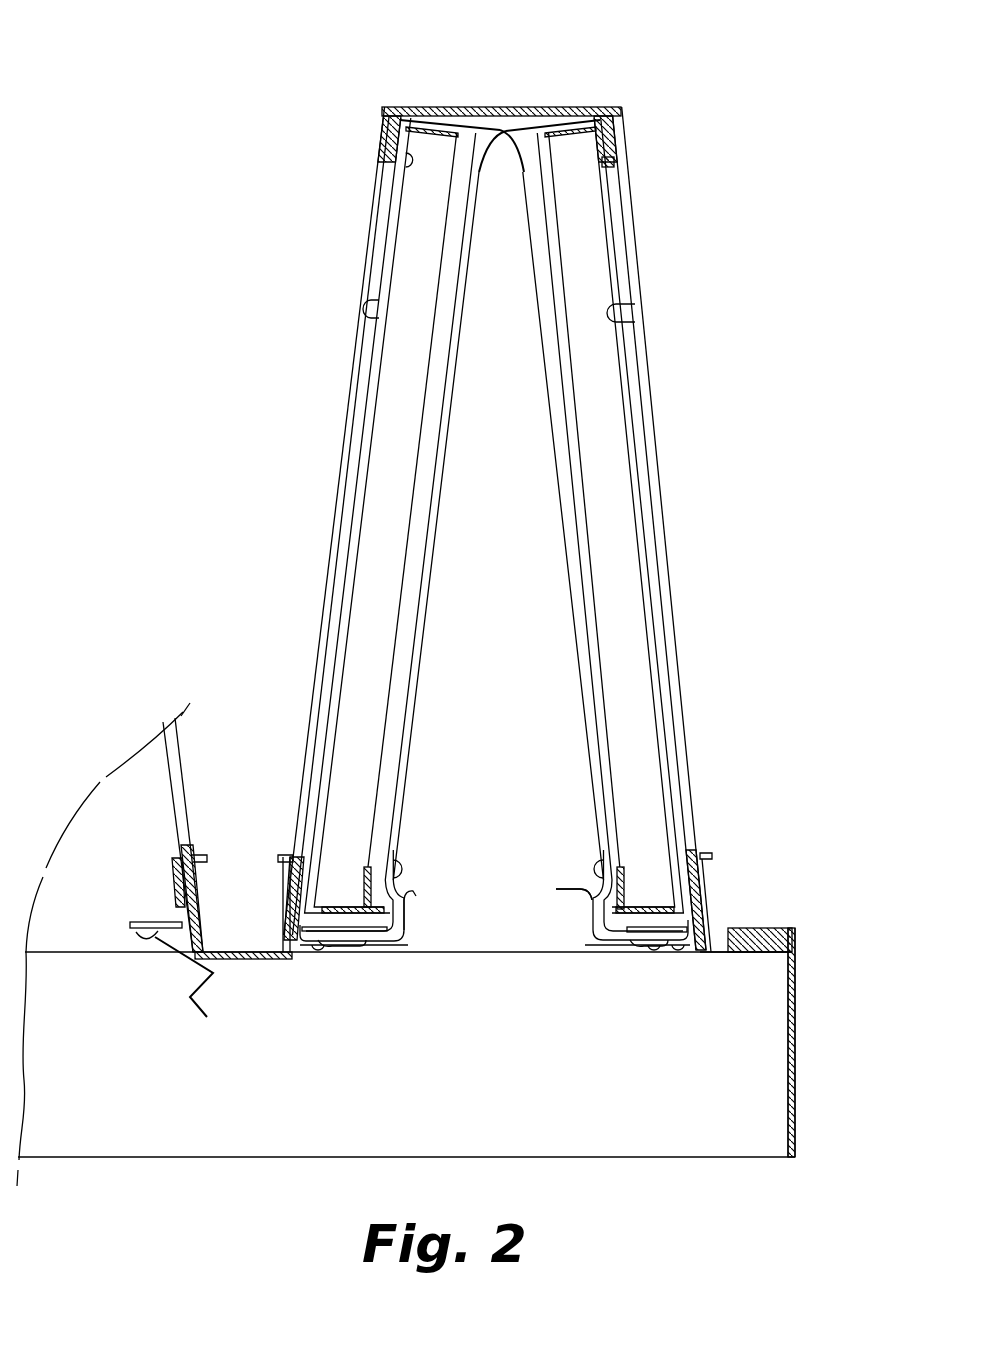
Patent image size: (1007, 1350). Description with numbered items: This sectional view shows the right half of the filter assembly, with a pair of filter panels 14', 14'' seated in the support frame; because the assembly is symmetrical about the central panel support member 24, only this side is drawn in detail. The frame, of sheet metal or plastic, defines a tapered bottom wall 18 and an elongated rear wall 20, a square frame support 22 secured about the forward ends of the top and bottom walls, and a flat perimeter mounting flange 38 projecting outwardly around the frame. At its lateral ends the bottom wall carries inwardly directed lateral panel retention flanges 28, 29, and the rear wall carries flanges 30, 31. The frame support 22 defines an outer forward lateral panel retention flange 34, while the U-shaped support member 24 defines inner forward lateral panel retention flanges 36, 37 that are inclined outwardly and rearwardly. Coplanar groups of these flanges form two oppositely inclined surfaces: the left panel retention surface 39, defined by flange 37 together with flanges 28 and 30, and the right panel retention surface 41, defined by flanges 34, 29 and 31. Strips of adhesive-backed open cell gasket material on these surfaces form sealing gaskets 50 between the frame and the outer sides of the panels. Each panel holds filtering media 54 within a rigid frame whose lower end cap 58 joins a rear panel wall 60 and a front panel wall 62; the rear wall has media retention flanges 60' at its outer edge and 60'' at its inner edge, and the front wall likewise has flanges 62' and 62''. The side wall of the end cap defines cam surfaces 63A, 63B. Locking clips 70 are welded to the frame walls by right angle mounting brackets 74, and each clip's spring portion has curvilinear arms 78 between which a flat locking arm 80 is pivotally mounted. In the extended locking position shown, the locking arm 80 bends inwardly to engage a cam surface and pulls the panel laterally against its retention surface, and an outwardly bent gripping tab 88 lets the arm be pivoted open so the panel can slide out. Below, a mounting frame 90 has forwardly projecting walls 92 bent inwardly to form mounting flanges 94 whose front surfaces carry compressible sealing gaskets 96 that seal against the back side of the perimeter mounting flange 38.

The filter panel 14' is at (391, 537).
The filter panel 14'' is at (605, 536).
The tapered bottom wall 18 is at (502, 585).
The elongated rear wall 20 is at (498, 110).
The frame support 22 is at (749, 955).
The panel support member 24 is at (250, 960).
The lateral panel retention flange 28 is at (349, 384).
The lateral panel retention flange 29 is at (660, 427).
The lateral panel retention flange 30 is at (380, 143).
The lateral panel retention flange 31 is at (628, 148).
The outer forward lateral panel retention flange 34 is at (703, 860).
The inner forward lateral panel retention flange 36 is at (200, 885).
The inner forward lateral panel retention flange 37 is at (292, 882).
The perimeter mounting flange 38 is at (718, 957).
The left panel retention surface 39 is at (372, 318).
The right panel retention surface 41 is at (636, 315).
The sealing gasket 50 is at (392, 122).
The filtering media 54 is at (366, 755).
The lower end cap 58 is at (396, 857).
The rear panel wall 60 is at (517, 90).
The media retention flange 60' is at (508, 179).
The media retention flange 60'' is at (497, 178).
The front panel wall 62 is at (493, 969).
The media retention flange 62' is at (498, 808).
The media retention flange 62'' is at (494, 879).
The cam surface 63A is at (533, 116).
The cam surface 63B is at (530, 115).
The locking clip 70 is at (312, 948).
The mounting bracket 74 is at (172, 924).
The curvilinear arms 78 is at (654, 946).
The locking arm 80 is at (398, 946).
The gripping tab 88 is at (556, 889).
The mounting frame 90 is at (797, 1064).
The walls 92 is at (797, 1010).
The mounting flange 94 is at (760, 930).
The compressible sealing gasket 96 is at (797, 935).